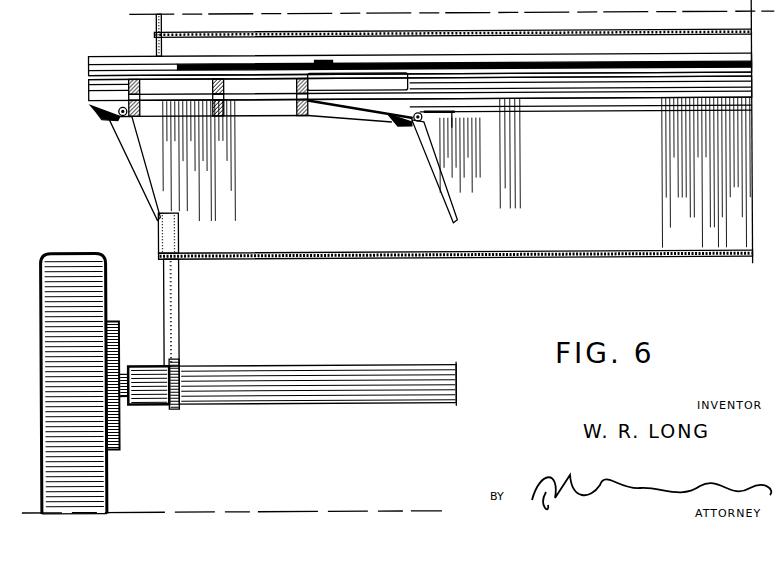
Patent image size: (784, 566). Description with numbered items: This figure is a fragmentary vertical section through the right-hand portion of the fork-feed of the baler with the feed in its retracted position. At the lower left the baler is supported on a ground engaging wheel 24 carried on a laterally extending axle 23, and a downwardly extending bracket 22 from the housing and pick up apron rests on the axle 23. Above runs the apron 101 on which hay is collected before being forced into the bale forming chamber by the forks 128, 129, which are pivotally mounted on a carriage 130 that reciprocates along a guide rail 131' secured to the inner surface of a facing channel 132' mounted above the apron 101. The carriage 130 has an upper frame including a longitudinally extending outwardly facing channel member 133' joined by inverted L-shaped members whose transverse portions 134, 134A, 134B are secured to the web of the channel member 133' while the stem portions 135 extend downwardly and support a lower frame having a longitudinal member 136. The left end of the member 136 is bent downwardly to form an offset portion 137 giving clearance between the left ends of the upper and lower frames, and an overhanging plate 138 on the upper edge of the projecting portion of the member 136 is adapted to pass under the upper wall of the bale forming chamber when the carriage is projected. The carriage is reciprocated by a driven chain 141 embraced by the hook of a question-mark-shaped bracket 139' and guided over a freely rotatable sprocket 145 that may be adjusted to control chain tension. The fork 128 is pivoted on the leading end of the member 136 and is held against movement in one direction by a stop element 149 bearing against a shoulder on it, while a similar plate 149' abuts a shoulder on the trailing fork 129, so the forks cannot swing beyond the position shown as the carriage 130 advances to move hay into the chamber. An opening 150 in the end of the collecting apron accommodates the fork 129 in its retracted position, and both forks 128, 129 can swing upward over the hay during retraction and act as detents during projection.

The bracket 22 is at (184, 310).
The axle 23 is at (238, 405).
The ground engaging wheel 24 is at (95, 468).
The apron 101 is at (450, 258).
The fork 128 is at (441, 166).
The fork 129 is at (128, 152).
The carriage 130 is at (272, 125).
The guide rail 131' is at (398, 88).
The channel 132' is at (398, 64).
The channel member 133' is at (367, 65).
The transverse portion 134 is at (309, 85).
The transverse portion 134A is at (225, 87).
The transverse portion 134B is at (141, 87).
The stem portion 135 is at (140, 117).
The longitudinal member 136 is at (150, 117).
The offset portion 137 is at (367, 114).
The overhanging plate 138 is at (450, 113).
The pin 139' is at (340, 54).
The driven chain 141 is at (649, 69).
The sprocket 145 is at (206, 64).
The stop element 149 is at (397, 135).
The plate 149' is at (101, 122).
The opening 150 is at (163, 230).